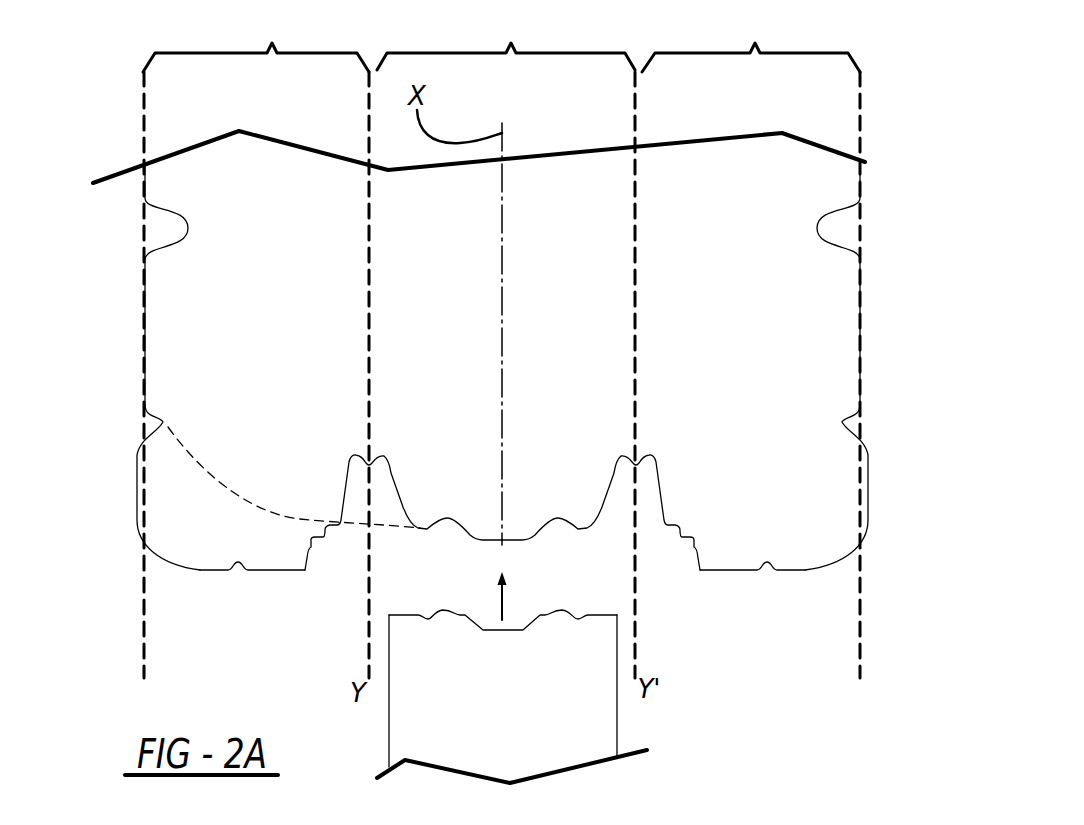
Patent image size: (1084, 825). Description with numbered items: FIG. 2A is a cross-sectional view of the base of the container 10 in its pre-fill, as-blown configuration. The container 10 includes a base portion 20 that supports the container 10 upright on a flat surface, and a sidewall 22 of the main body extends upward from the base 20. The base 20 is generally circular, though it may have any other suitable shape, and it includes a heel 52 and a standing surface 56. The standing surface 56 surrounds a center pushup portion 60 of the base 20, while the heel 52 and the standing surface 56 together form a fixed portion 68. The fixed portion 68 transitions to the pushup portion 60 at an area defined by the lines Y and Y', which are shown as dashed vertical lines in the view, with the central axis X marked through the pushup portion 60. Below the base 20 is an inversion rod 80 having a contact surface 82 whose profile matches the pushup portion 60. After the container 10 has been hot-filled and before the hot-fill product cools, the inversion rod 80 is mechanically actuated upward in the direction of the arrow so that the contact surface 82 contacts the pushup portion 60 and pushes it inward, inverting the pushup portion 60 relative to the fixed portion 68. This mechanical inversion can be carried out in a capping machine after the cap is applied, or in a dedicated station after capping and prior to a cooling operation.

The container 10 is at (96, 222).
The base portion 20 is at (255, 582).
The sidewall 22 is at (860, 175).
The heel 52 is at (140, 520).
The standing surface 56 is at (210, 570).
The center pushup portion 60 is at (898, 326).
The fixed portion 68 is at (501, 343).
The inversion rod 80 is at (587, 737).
The contact surface 82 is at (458, 612).